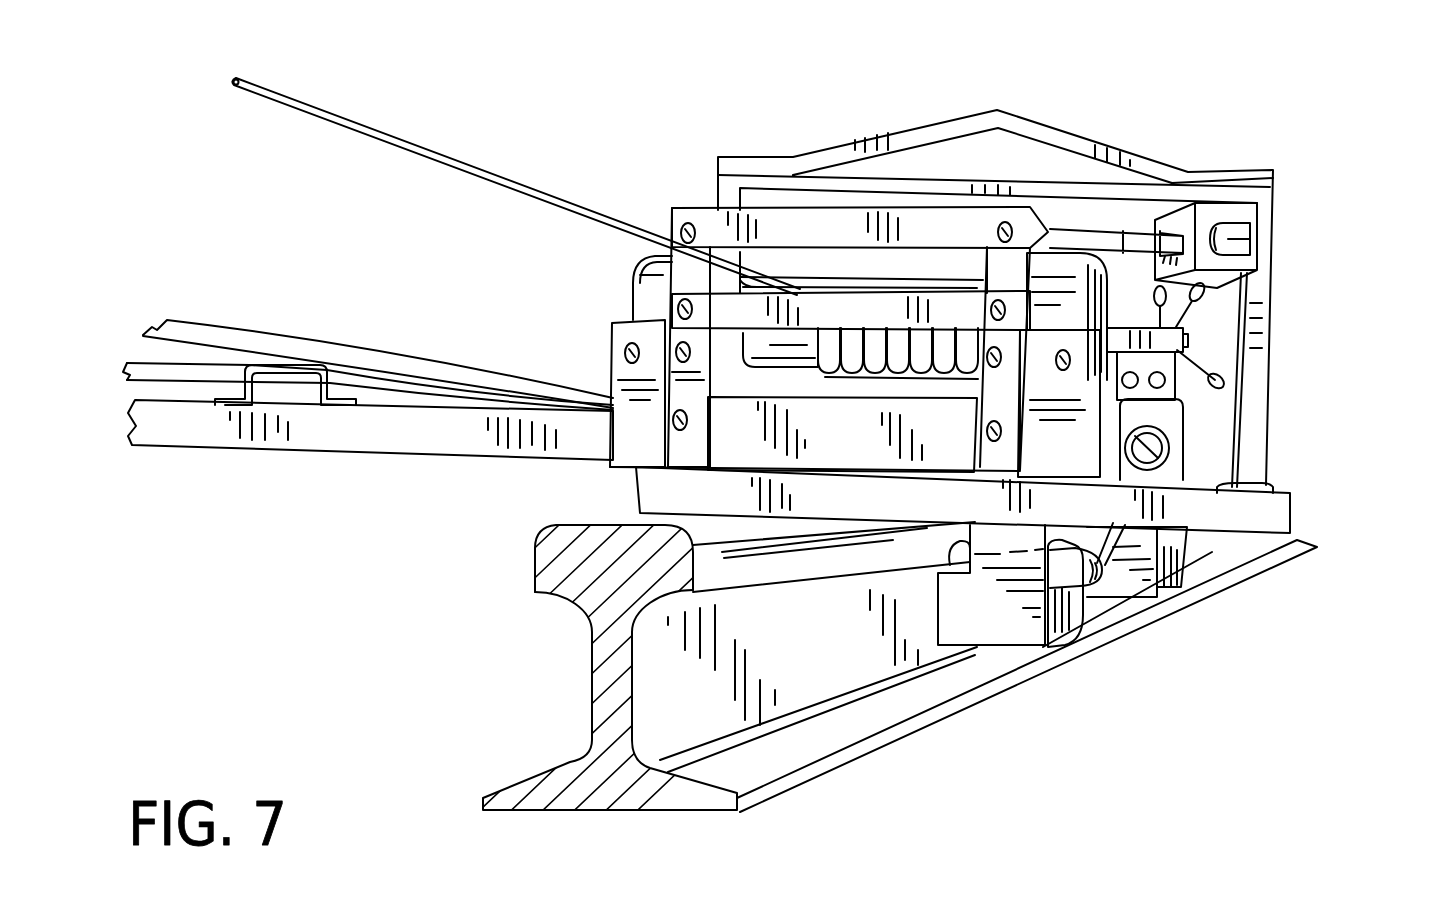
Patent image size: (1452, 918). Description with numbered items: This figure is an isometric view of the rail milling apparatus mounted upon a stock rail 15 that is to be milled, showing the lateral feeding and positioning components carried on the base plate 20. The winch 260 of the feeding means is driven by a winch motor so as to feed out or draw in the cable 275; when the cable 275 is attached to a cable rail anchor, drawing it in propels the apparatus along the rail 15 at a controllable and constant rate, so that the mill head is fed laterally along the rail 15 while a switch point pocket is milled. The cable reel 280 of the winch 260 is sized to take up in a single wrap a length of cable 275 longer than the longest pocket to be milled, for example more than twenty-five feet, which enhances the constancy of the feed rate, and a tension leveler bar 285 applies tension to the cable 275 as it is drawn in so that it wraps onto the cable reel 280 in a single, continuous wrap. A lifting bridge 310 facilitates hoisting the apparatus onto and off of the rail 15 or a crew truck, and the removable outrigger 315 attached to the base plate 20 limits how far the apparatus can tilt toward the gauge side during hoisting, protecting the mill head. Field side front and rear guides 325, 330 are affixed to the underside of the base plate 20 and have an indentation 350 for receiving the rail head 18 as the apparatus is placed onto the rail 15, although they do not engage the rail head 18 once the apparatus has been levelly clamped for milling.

The rail 15 is at (590, 688).
The rail head 18 is at (535, 565).
The base plate 20 is at (1293, 503).
The winch 260 is at (630, 282).
The cable 275 is at (398, 128).
The cable reel 280 is at (712, 347).
The tension leveler bar 285 is at (818, 272).
The lifting bridge 310 is at (1197, 170).
The outrigger 315 is at (370, 448).
The field side front guide 325 is at (1117, 628).
The field side rear guide 330 is at (1190, 568).
The indentation 350 is at (950, 565).